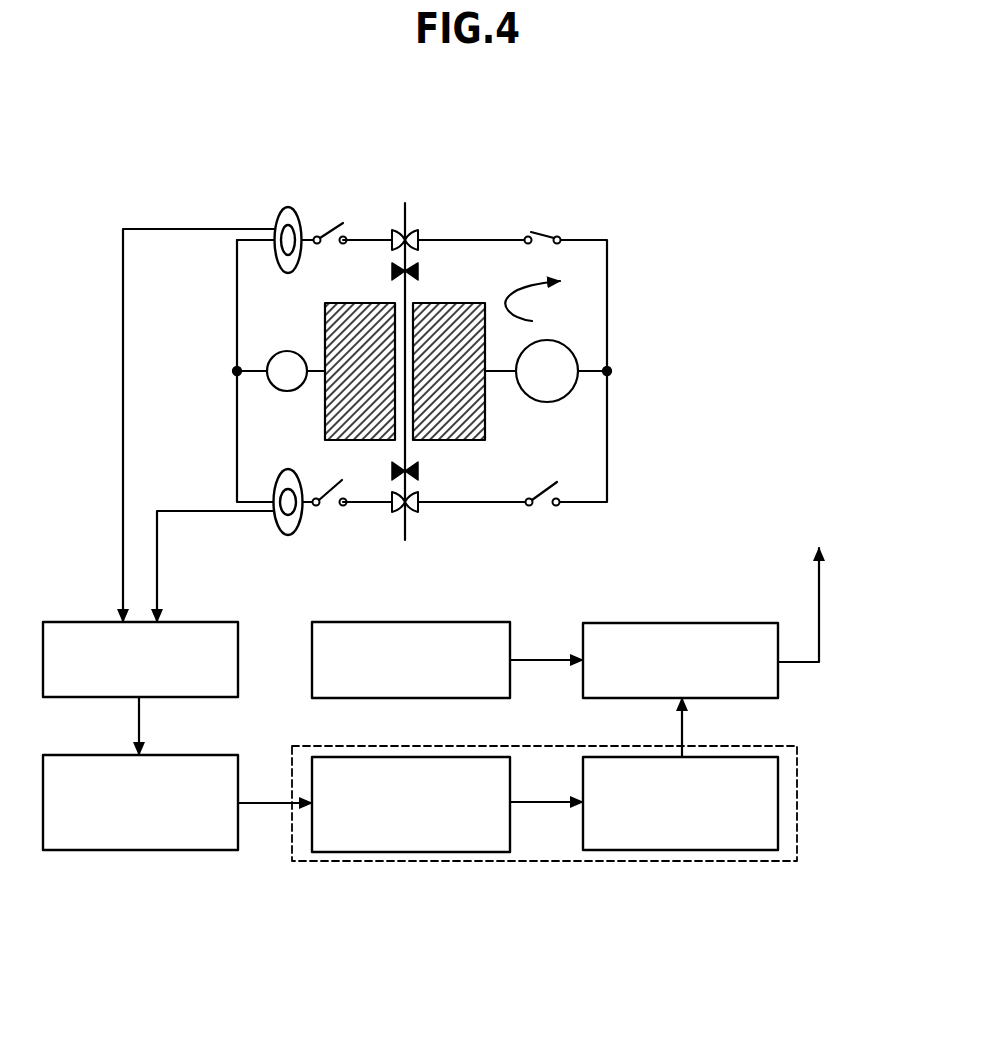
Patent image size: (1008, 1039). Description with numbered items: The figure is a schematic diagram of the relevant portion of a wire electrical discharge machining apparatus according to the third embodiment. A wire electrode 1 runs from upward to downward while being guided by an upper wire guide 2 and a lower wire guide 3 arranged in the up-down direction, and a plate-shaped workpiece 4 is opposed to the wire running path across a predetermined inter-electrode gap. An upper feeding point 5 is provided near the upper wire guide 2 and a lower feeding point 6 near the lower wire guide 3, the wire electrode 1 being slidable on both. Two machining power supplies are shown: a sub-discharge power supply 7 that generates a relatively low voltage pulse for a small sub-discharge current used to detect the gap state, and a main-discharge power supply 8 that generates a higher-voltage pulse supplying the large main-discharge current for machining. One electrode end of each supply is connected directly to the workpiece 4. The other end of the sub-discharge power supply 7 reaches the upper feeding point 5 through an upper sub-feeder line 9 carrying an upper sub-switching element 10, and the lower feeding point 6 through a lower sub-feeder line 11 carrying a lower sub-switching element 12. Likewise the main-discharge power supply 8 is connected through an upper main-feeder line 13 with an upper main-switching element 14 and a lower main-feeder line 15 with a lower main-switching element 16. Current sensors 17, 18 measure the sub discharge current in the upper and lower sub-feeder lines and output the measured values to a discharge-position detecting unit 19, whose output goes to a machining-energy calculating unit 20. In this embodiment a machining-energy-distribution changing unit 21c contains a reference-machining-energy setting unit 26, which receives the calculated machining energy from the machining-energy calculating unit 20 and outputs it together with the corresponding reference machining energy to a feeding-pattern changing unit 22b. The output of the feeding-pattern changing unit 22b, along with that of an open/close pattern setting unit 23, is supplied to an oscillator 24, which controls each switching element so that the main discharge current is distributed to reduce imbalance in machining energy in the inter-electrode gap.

The wire electrode 1 is at (405, 203).
The wire guide 2 is at (418, 271).
The wire guide 3 is at (418, 471).
The workpiece 4 is at (485, 415).
The upper feeding point 5 is at (418, 235).
The lower feeding point 6 is at (412, 513).
The sub-discharge power supply 7 is at (287, 351).
The main-discharge power supply 8 is at (547, 402).
The upper sub-feeder line 9 is at (237, 300).
The upper sub-switching element 10 is at (335, 228).
The lower sub-feeder line 11 is at (237, 445).
The lower sub-switching element 12 is at (339, 490).
The upper main-feeder line 13 is at (500, 240).
The upper main-switching element 14 is at (557, 240).
The lower main-feeder line 15 is at (497, 502).
The lower main-switching element 16 is at (548, 490).
The current sensor 17 is at (288, 207).
The current sensor 18 is at (288, 535).
The discharge-position detecting unit 19 is at (197, 622).
The machining-energy calculating unit 20 is at (197, 755).
The machining-energy-distribution changing unit 21c is at (672, 862).
The feeding-pattern changing unit 22b is at (740, 757).
The open/close pattern setting unit 23 is at (470, 622).
The oscillator 24 is at (740, 623).
The reference-machining-energy setting unit 26 is at (470, 757).